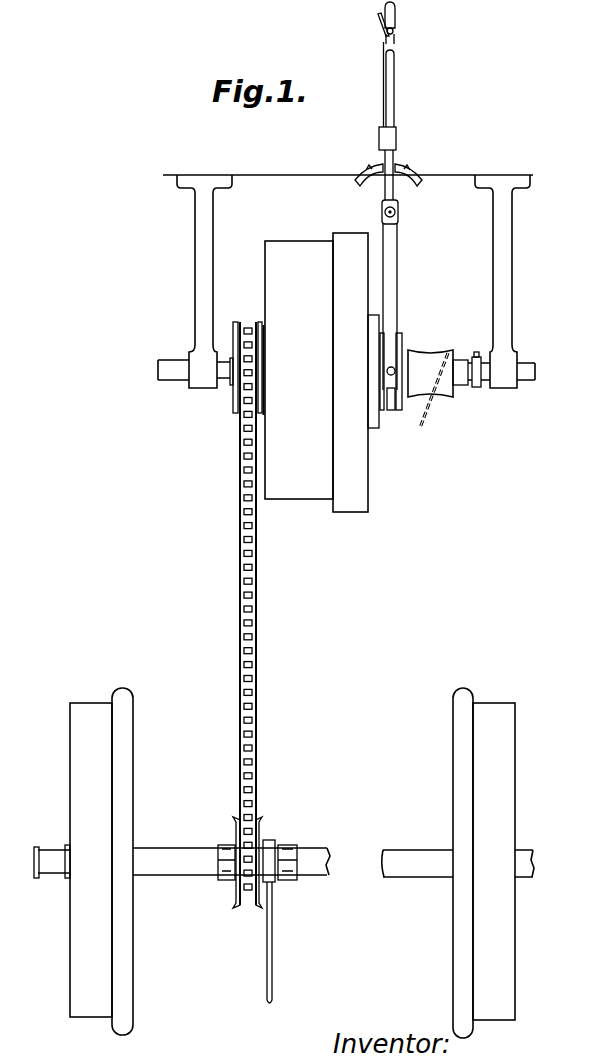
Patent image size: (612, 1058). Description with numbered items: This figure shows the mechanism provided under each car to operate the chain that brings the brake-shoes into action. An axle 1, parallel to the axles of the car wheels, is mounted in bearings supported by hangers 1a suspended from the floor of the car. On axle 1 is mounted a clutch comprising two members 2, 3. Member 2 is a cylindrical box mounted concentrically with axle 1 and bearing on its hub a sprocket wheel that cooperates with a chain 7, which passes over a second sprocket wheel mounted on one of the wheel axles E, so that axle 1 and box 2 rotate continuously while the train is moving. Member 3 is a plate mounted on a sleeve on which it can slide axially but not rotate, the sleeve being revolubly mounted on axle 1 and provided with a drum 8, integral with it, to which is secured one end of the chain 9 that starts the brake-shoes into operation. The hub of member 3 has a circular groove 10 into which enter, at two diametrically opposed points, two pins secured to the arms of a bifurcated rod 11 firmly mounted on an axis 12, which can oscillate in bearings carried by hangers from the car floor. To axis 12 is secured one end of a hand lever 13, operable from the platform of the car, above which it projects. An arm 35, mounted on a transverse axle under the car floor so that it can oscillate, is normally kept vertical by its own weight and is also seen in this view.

The axle 1 is at (170, 372).
The hangers 1a is at (208, 237).
The clutch member 2 is at (299, 370).
The clutch member 3 is at (356, 372).
The chain 7 is at (245, 448).
The drum 8 is at (438, 373).
The chain 9 is at (430, 412).
The circular groove 10 is at (389, 409).
The bifurcated rod 11 is at (392, 282).
The axis 12 is at (399, 214).
The hand lever 13 is at (391, 67).
The arm 35 is at (272, 923).
The wheel axle E is at (153, 857).